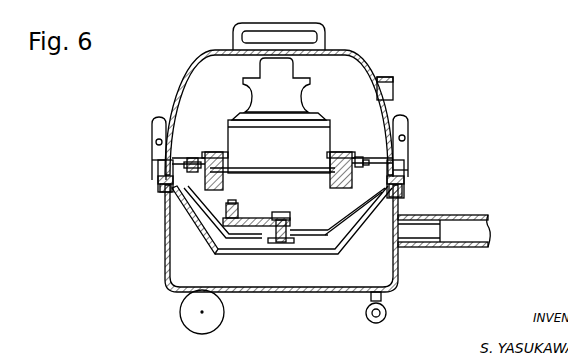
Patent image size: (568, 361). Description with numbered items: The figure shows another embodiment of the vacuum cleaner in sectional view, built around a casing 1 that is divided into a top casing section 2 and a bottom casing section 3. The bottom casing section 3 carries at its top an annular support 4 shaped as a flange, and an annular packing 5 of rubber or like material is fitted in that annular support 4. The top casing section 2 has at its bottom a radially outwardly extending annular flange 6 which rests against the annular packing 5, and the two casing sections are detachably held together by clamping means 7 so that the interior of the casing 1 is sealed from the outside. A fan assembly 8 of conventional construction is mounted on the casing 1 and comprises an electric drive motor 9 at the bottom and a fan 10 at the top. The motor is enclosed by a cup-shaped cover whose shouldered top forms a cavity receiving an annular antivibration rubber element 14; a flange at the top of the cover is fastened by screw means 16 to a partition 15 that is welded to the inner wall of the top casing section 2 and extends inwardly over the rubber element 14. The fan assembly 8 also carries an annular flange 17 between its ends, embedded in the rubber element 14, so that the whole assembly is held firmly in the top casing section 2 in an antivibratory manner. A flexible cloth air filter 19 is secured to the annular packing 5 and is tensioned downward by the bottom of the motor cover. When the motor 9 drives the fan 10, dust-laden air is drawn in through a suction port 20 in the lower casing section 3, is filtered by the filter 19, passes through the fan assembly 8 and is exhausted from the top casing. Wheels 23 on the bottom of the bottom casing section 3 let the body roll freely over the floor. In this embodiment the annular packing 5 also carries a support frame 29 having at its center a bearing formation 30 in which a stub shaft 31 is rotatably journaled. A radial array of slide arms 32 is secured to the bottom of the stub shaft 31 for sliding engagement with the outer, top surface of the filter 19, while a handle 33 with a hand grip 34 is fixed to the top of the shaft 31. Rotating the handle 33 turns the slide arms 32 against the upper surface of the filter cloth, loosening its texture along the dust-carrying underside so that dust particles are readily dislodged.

The casing 1 is at (178, 92).
The top casing section 2 is at (210, 60).
The bottom casing section 3 is at (190, 218).
The annular support 4 is at (400, 195).
The annular packing 5 is at (158, 183).
The annular flange 6 is at (162, 168).
The clamping means 7 is at (158, 125).
The fan assembly 8 is at (285, 97).
The electric drive motor 9 is at (298, 180).
The fan 10 is at (293, 108).
The antivibration rubber element 14 is at (162, 190).
The partition 15 is at (158, 162).
The screw means 16 is at (162, 200).
The annular flange 17 is at (195, 232).
The air filter 19 is at (170, 265).
The suction port 20 is at (405, 230).
The wheels 23 is at (212, 318).
The support frame 29 is at (396, 172).
The bearing formation 30 is at (316, 240).
The stub shaft 31 is at (287, 240).
The slide arms 32 is at (328, 250).
The handle 33 is at (243, 230).
The hand grip 34 is at (190, 245).